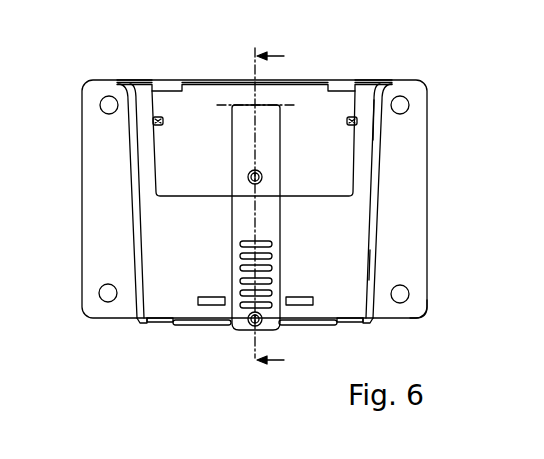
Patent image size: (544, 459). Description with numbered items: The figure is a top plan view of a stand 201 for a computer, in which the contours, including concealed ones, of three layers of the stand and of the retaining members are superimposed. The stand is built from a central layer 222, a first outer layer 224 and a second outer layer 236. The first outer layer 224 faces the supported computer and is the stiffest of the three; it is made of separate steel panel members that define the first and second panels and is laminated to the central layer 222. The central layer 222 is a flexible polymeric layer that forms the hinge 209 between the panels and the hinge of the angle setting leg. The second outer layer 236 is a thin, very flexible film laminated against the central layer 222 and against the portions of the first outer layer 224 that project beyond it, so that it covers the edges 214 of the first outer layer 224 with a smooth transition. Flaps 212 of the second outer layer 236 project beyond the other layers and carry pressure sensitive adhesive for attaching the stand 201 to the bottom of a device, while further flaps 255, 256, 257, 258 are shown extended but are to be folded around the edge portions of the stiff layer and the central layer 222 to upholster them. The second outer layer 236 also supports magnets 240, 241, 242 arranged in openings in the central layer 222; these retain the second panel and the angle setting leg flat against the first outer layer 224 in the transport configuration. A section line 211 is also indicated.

The stand 201 is at (86, 331).
The hinge 209 is at (306, 197).
The central column / section line 211 is at (242, 103).
The flaps 212 is at (107, 238).
The edges 214 is at (128, 182).
The central layer 222 is at (386, 214).
The first outer layer 224 is at (388, 268).
The second outer layer 236 is at (436, 316).
The magnets 240 is at (155, 116).
The magnet 241 is at (250, 326).
The magnet 242 is at (262, 172).
The flap 255 is at (185, 325).
The flap 256 is at (131, 80).
The flap 257 is at (188, 82).
The flap 258 is at (140, 323).